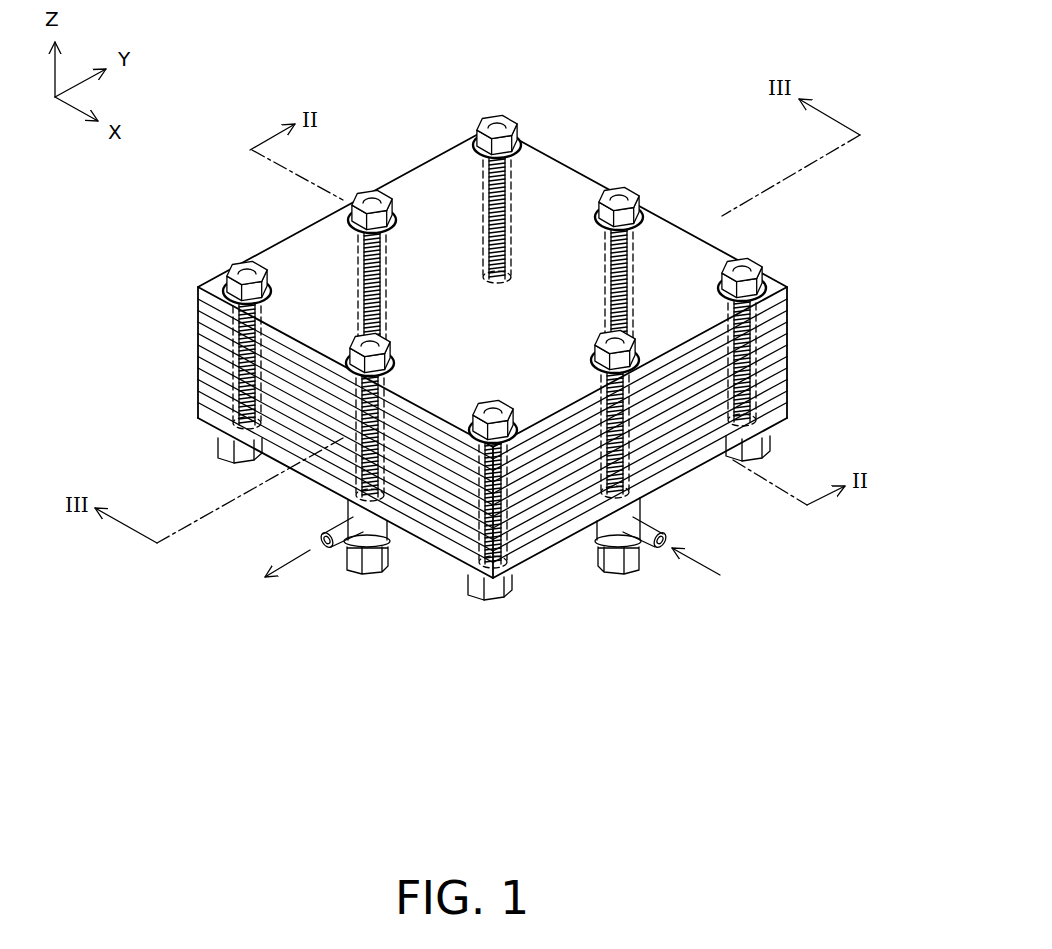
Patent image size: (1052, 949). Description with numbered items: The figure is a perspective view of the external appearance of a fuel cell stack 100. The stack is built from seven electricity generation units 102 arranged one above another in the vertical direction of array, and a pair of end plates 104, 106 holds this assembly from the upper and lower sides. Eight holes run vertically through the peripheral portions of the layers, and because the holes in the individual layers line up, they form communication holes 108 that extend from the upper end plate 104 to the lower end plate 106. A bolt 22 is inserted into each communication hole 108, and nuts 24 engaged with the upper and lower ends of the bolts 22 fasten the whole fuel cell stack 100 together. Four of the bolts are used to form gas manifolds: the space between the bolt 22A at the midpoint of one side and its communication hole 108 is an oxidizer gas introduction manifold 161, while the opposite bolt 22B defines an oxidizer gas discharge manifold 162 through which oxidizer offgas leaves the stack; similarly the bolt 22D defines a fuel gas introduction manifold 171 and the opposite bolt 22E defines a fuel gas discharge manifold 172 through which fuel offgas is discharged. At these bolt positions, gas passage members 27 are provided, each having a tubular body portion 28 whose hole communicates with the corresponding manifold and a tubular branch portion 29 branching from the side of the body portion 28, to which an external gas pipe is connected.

The fuel cell stack 100 is at (678, 55).
The electricity generation unit 102 is at (788, 402).
The end plate 104 is at (789, 294).
The end plate 106 is at (789, 408).
The communication hole 108 is at (532, 331).
The oxidizer gas introduction manifold 161 is at (698, 304).
The oxidizer gas discharge manifold 162 is at (352, 212).
The fuel gas introduction manifold 171 is at (780, 143).
The fuel gas discharge manifold 172 is at (513, 335).
The bolt 22 is at (496, 345).
The bolt 22A is at (555, 478).
The bolt 22B is at (386, 248).
The bolt 22D is at (631, 255).
The bolt 22E is at (388, 387).
The nut 24 is at (502, 126).
The gas passage member 27 is at (450, 596).
The body portion 28 is at (350, 515).
The branch portion 29 is at (326, 537).